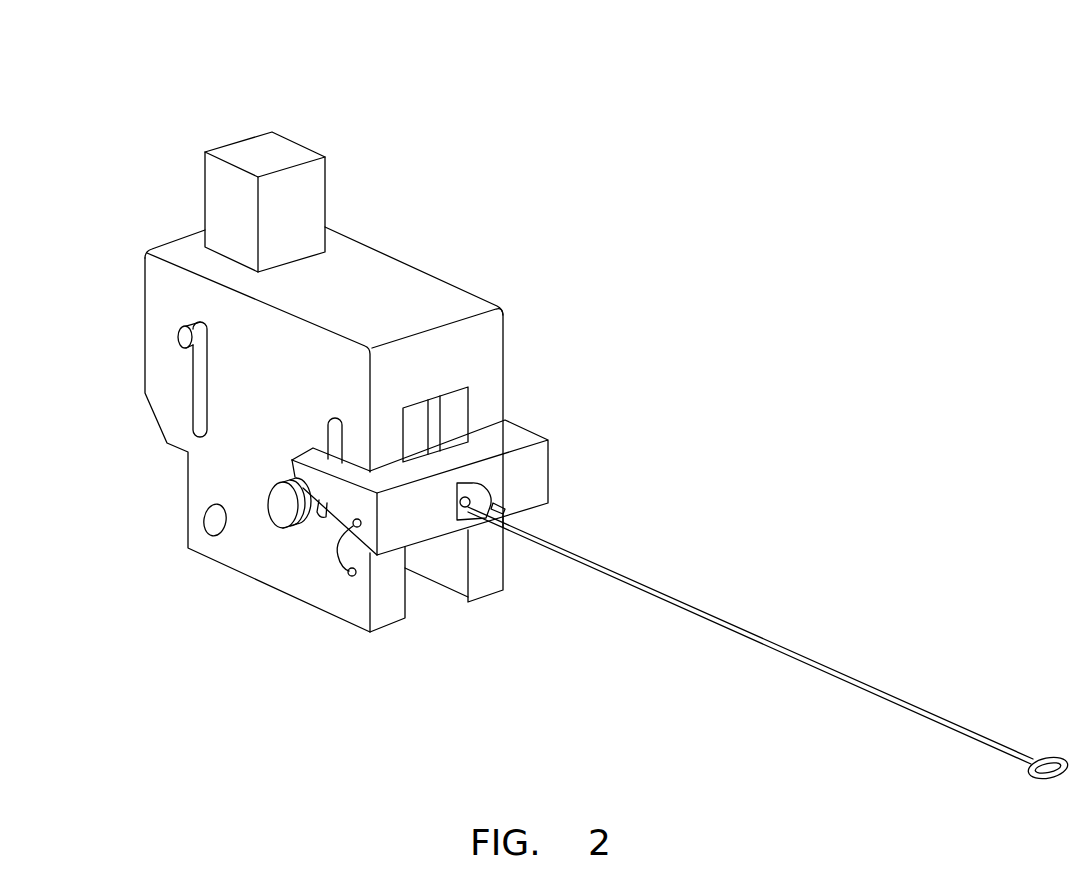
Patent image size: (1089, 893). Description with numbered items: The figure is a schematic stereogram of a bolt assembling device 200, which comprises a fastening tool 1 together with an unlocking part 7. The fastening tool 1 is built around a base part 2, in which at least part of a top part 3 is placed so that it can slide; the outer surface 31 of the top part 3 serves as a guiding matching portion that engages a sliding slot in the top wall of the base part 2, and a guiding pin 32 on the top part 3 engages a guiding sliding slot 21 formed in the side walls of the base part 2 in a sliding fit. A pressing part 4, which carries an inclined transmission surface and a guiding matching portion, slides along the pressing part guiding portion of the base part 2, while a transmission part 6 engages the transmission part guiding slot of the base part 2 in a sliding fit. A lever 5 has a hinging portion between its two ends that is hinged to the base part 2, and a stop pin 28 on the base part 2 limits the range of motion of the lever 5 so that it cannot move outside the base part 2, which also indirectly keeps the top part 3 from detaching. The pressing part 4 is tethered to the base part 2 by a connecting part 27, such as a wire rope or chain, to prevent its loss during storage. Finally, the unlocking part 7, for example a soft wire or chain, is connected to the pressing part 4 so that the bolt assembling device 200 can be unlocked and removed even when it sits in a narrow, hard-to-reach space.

The bolt assembling device 200 is at (92, 50).
The fastening tool 1 is at (496, 170).
The base part 2 is at (203, 467).
The top part 3 is at (205, 187).
The outer surface 31 is at (265, 202).
The guiding pin 32 is at (180, 332).
The guiding sliding slot 21 is at (190, 380).
The stop pin 28 is at (215, 537).
The lever 5 is at (285, 515).
The transmission part 6 is at (322, 518).
The connecting part 27 is at (363, 553).
The pressing part 4 is at (540, 492).
The unlocking part 7 is at (692, 602).